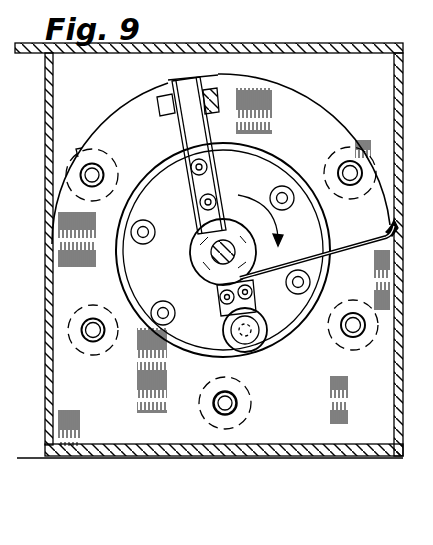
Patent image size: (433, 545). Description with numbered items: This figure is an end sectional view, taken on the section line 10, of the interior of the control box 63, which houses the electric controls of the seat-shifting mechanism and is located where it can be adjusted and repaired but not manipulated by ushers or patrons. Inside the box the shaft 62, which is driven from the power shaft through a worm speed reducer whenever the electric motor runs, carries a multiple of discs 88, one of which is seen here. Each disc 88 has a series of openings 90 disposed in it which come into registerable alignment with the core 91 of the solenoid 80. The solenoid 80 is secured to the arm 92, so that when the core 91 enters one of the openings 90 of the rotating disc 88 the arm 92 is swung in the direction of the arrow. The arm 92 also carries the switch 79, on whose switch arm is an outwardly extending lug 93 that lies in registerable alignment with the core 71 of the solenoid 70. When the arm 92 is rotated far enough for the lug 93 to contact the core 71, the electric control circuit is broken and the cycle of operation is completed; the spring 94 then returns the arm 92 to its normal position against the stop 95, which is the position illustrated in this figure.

The section line 10 is at (206, 32).
The shaft 62 is at (210, 248).
The control box 63 is at (88, 437).
The solenoid 70 is at (370, 157).
The core 71 is at (93, 340).
The switch 79 is at (207, 78).
The solenoid 80 is at (210, 263).
The disc 88 is at (193, 333).
The openings 90 is at (283, 197).
The core 91 is at (232, 322).
The arm 92 is at (210, 180).
The lug 93 is at (217, 98).
The spring 94 is at (338, 247).
The stop 95 is at (150, 96).